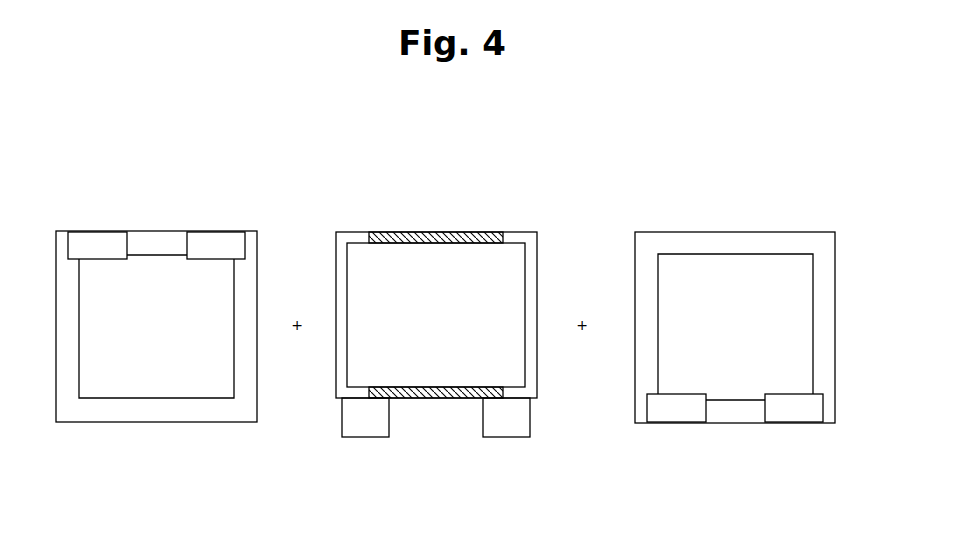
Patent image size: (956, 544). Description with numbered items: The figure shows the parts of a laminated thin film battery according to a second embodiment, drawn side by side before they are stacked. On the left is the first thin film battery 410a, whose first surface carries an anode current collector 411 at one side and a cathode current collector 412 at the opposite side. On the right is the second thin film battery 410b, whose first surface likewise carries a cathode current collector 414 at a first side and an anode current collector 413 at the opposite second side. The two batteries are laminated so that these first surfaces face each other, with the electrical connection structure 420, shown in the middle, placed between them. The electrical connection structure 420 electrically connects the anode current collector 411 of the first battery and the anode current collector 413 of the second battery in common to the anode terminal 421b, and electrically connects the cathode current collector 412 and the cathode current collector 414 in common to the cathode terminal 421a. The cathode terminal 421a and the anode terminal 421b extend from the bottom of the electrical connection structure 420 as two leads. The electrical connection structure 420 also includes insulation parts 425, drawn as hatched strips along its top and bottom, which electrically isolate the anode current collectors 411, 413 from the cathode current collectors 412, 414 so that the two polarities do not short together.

The first thin film battery 410a is at (156, 269).
The anode current collector 411 is at (98, 231).
The cathode current collector 412 is at (216, 222).
The electrical connection structure 420 is at (436, 339).
The insulation parts 425 is at (438, 233).
The cathode terminal 421a is at (363, 430).
The anode terminal 421b is at (509, 430).
The second thin film battery 410b is at (735, 303).
The anode current collector 413 is at (796, 422).
The cathode current collector 414 is at (675, 422).